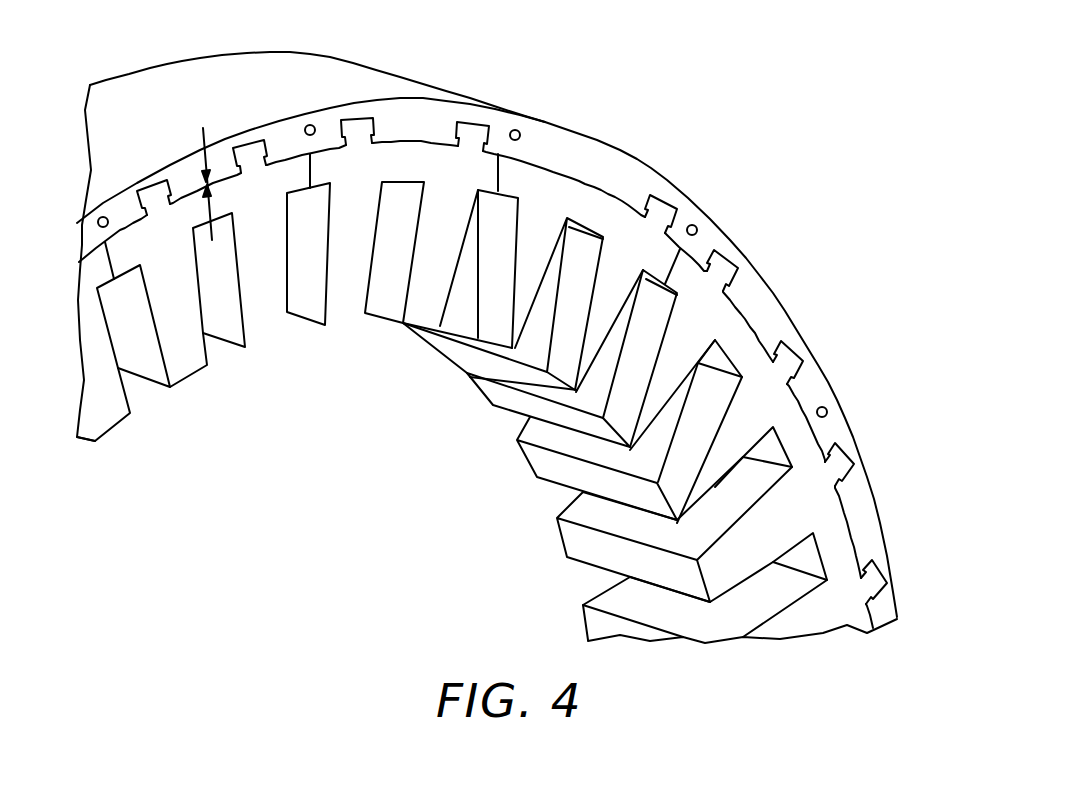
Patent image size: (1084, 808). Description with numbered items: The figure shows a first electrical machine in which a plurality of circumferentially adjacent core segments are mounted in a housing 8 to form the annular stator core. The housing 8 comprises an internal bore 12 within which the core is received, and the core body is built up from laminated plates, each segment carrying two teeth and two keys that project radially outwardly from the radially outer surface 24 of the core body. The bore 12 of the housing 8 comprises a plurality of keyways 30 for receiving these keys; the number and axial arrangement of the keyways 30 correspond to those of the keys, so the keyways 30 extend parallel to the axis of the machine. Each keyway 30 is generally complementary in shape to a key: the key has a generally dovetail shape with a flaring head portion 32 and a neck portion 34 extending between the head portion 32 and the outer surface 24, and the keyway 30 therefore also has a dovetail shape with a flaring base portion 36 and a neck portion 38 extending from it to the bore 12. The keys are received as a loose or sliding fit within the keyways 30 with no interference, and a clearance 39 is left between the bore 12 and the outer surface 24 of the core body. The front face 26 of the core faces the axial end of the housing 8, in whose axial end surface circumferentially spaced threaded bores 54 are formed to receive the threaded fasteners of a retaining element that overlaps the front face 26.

The housing 8 is at (613, 163).
The internal bore 12 is at (640, 216).
The radially outer surface 24 is at (420, 138).
The front face 26 is at (347, 297).
The keyway 30 is at (741, 262).
The head portion 32 is at (806, 360).
The neck portion 34 is at (800, 385).
The base portion 36 is at (853, 473).
The neck portion 38 is at (842, 487).
The clearance 39 is at (203, 135).
The threaded bore 54 is at (310, 124).